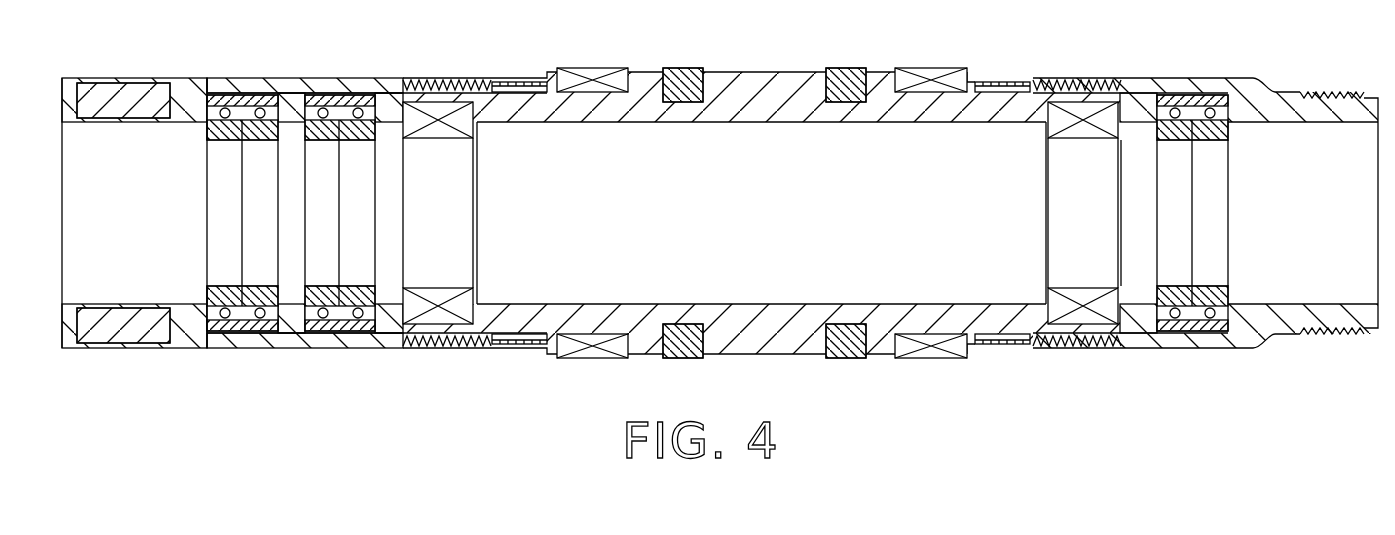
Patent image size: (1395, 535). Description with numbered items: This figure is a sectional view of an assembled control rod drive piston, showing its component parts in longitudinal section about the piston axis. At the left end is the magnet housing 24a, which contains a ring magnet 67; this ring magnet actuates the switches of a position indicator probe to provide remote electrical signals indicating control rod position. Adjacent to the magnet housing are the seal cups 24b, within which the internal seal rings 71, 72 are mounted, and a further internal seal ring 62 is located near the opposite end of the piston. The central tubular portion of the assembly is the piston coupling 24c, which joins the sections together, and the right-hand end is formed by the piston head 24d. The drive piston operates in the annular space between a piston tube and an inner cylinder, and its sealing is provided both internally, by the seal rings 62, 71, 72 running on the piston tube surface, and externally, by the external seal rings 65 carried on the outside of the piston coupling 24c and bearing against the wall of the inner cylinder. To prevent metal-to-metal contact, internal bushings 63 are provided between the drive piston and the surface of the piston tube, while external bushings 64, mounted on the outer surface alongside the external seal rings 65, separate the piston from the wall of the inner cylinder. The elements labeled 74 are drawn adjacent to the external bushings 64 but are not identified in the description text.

The magnet housing 24a is at (110, 78).
The seal cups 24b is at (297, 98).
The piston coupling 24c is at (762, 78).
The piston head 24d is at (1237, 78).
The internal seal ring 62 is at (1188, 138).
The internal bushing 63 is at (420, 289).
The external bushing 64 is at (598, 70).
The external seal ring 65 is at (685, 68).
The ring magnet 67 is at (125, 83).
The internal seal ring 71 is at (243, 140).
The internal seal ring 72 is at (332, 139).
The lock nut 74 is at (522, 82).